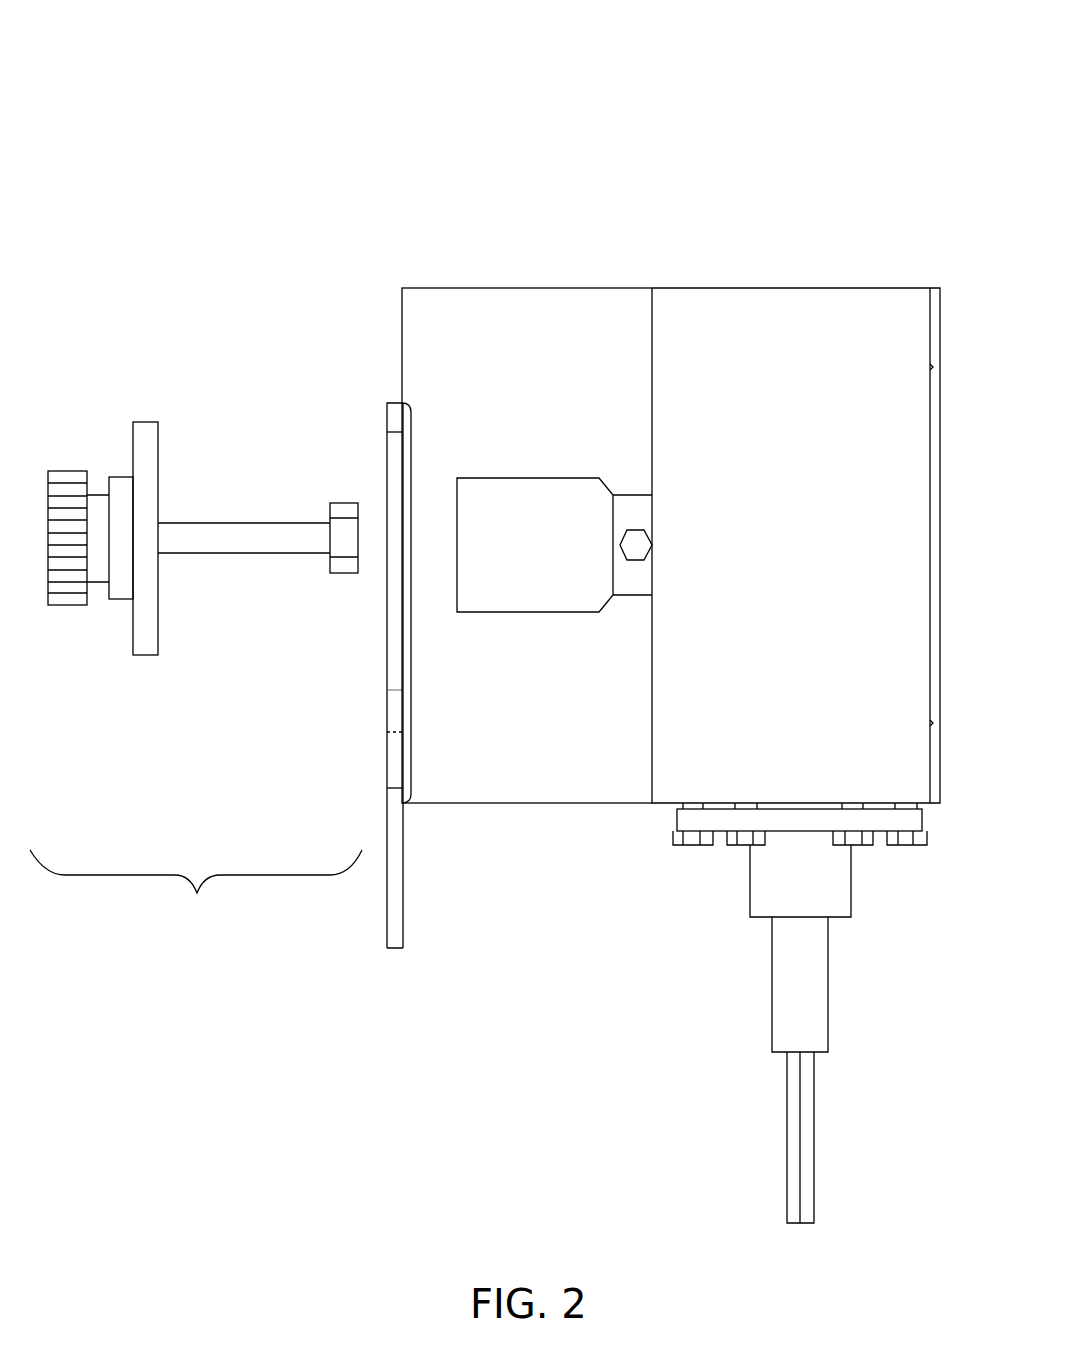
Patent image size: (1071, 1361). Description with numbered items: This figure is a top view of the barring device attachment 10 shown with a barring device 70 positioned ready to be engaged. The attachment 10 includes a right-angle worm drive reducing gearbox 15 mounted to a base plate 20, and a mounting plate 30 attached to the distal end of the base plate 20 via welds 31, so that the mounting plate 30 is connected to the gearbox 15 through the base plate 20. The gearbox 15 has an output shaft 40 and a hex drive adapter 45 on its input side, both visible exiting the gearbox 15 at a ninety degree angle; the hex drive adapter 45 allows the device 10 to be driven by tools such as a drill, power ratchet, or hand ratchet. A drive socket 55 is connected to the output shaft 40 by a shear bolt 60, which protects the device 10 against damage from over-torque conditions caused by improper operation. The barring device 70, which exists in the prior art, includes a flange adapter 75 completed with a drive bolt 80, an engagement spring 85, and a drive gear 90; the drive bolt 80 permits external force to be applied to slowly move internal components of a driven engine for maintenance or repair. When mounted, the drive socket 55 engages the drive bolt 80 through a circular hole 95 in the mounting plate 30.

The barring device attachment 10 is at (108, 170).
The right-angle worm drive reducing gearbox 15 is at (827, 335).
The base plate 20 is at (478, 407).
The mounting plate 30 is at (396, 445).
The welds 31 is at (407, 770).
The output shaft 40 is at (627, 584).
The hex drive adapter 45 is at (815, 997).
The drive socket 55 is at (544, 503).
The shear bolt 60 is at (628, 543).
The barring device 70 is at (196, 910).
The flange adapter 75 is at (148, 645).
The drive bolt 80 is at (345, 512).
The engagement spring 85 is at (220, 550).
The drive gear 90 is at (65, 472).
The circular hole 95 is at (399, 692).